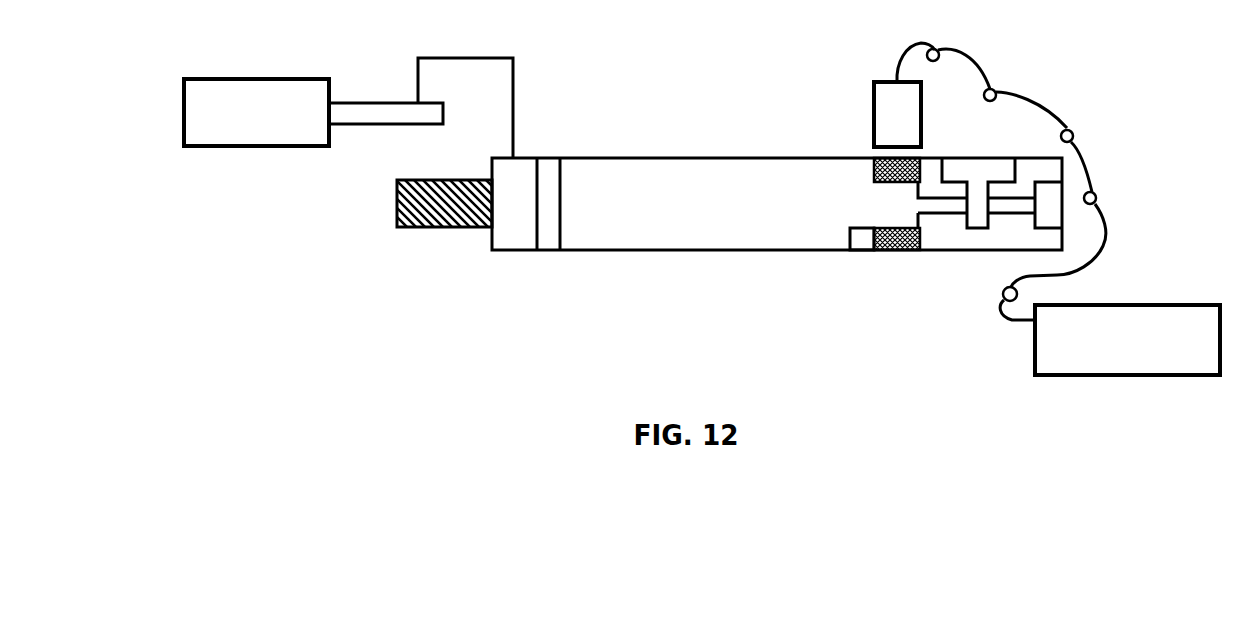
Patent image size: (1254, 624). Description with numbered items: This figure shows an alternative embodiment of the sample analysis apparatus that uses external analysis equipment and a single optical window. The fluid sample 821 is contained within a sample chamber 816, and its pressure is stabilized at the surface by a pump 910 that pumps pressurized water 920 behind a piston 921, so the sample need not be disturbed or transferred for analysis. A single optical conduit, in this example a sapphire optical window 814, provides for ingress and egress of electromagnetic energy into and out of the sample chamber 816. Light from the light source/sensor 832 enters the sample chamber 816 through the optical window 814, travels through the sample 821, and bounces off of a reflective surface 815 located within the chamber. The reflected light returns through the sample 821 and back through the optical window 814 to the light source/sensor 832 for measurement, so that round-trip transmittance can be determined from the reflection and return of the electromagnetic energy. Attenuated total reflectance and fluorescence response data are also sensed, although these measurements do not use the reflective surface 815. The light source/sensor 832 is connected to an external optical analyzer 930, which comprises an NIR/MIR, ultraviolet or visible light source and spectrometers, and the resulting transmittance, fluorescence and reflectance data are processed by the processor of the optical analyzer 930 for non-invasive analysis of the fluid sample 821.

The pump 910 is at (304, 79).
The piston 921 is at (548, 158).
The pressurized water 920 is at (518, 248).
The sample chamber 816 is at (665, 158).
The sample 821 is at (727, 219).
The optical window 814 is at (870, 158).
The light source/sensor 832 is at (922, 121).
The reflective surface 815 is at (877, 252).
The optical analyzer 930 is at (1182, 305).